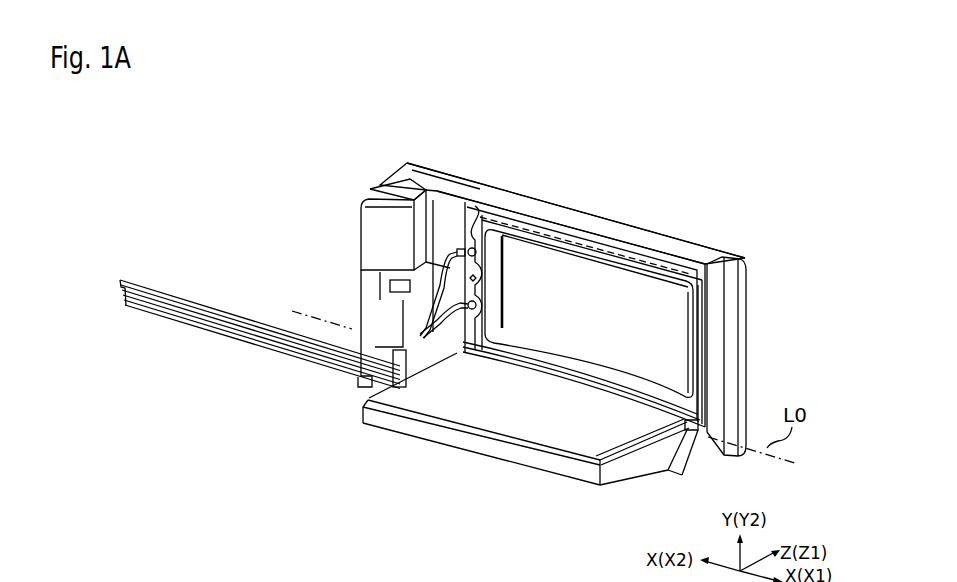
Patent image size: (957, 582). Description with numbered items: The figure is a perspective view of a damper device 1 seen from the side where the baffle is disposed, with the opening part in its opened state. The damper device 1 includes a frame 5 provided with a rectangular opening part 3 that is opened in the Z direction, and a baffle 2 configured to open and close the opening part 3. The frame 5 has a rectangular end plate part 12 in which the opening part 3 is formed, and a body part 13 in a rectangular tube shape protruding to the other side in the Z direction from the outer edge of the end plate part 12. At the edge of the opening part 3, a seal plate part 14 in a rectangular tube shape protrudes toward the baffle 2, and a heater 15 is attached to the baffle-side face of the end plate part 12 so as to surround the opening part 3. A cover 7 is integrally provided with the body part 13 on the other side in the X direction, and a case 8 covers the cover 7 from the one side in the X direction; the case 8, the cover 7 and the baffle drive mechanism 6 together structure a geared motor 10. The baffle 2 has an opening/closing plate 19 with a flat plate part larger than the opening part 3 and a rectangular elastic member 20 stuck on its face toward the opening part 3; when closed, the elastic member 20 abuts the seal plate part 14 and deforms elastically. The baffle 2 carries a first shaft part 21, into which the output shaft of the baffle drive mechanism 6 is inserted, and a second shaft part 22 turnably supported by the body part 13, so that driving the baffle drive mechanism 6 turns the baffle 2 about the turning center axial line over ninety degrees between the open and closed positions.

The damper device 1 is at (773, 209).
The baffle 2 is at (414, 436).
The opening part 3 is at (553, 277).
The frame 5 is at (707, 245).
The baffle drive mechanism 6 is at (386, 247).
The cover 7 is at (440, 240).
The case 8 is at (370, 221).
The geared motor 10 is at (445, 158).
The end plate part 12 is at (641, 254).
The body part 13 is at (722, 337).
The seal plate part 14 is at (583, 369).
The heater 15 is at (563, 234).
The opening/closing plate 19 is at (577, 487).
The elastic member 20 is at (611, 442).
The first shaft part 21 is at (398, 366).
The second shaft part 22 is at (698, 432).